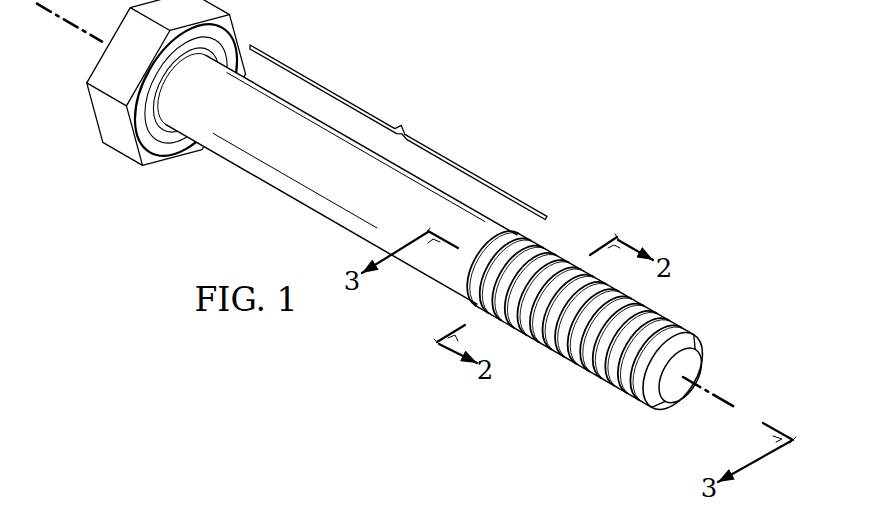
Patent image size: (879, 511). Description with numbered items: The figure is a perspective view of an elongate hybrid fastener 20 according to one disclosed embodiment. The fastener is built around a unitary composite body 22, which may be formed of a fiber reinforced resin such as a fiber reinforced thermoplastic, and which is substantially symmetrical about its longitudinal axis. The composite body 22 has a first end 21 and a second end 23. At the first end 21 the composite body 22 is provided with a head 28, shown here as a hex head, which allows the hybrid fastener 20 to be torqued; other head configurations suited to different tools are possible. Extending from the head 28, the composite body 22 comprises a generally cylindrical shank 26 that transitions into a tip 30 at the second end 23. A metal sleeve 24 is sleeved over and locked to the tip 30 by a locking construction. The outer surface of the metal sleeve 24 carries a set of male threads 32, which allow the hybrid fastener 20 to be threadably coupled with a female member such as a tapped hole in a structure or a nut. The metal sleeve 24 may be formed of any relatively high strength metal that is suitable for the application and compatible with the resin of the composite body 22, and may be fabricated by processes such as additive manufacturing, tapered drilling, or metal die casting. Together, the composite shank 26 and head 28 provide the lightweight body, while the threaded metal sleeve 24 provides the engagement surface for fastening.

The hybrid fastener 20 is at (364, 72).
The first end 21 is at (103, 168).
The composite body 22 is at (281, 202).
The second end 23 is at (709, 312).
The metal sleeve 24 is at (598, 389).
The shank 26 is at (406, 128).
The head 28 is at (88, 116).
The tip 30 is at (690, 393).
The male threads 32 is at (553, 360).